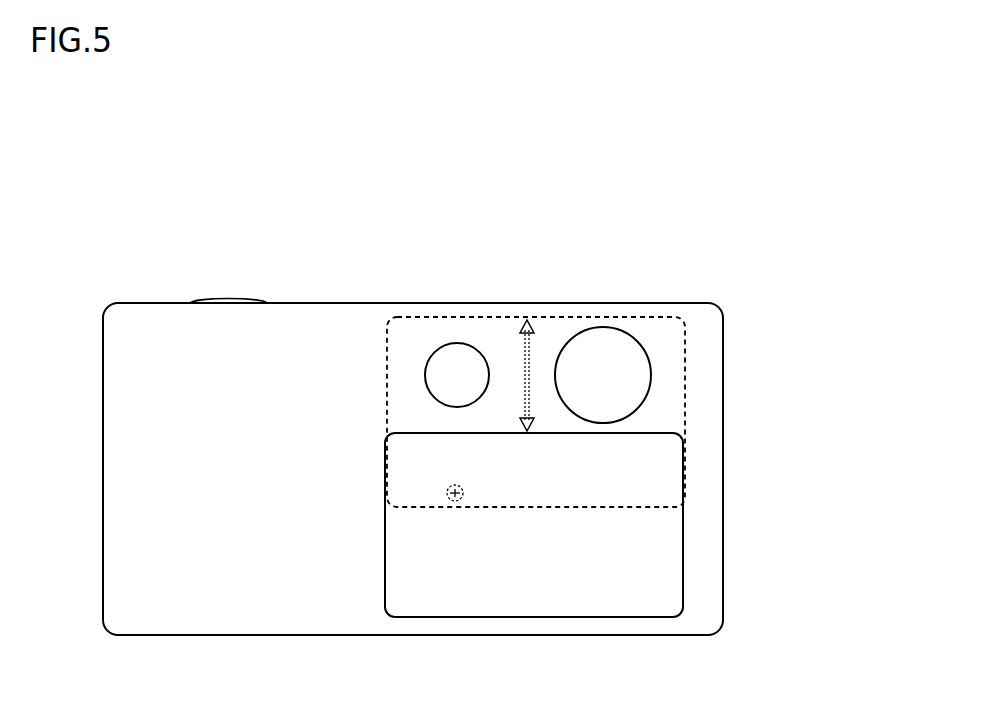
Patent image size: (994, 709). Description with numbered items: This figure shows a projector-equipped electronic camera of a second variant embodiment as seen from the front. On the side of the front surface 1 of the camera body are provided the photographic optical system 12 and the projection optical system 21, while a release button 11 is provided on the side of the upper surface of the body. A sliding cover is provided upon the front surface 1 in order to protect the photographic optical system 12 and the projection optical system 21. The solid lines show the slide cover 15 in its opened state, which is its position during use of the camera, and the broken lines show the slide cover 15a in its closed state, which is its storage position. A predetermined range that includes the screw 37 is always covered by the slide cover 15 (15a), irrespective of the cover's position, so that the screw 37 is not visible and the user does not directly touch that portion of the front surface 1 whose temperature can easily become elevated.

The front surface 1 is at (213, 585).
The release button 11 is at (232, 298).
The photographic optical system 12 is at (605, 367).
The slide cover 15 is at (673, 538).
The slide cover 15a is at (677, 373).
The projection optical system 21 is at (457, 367).
The screw 37 is at (457, 501).